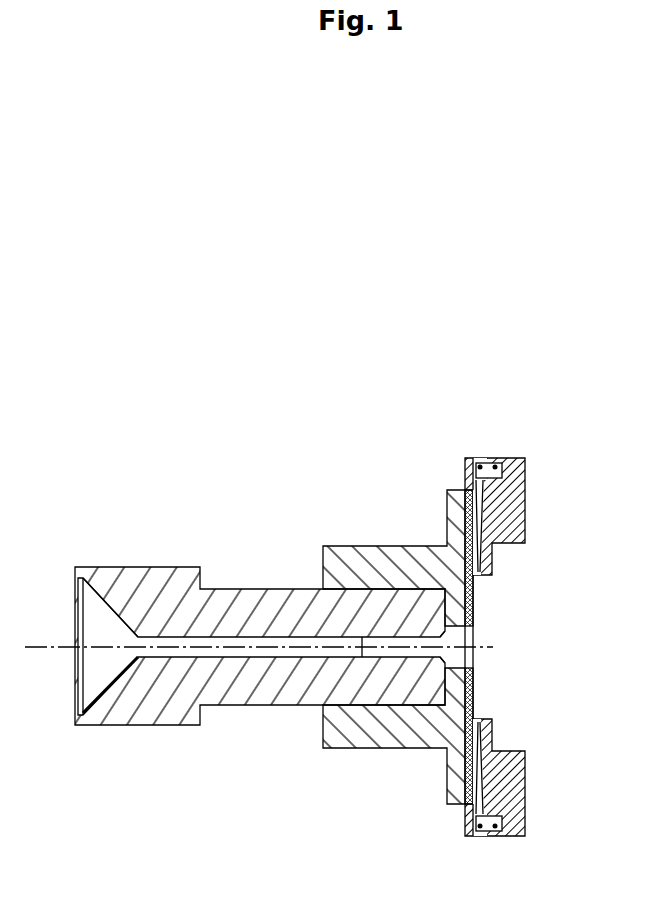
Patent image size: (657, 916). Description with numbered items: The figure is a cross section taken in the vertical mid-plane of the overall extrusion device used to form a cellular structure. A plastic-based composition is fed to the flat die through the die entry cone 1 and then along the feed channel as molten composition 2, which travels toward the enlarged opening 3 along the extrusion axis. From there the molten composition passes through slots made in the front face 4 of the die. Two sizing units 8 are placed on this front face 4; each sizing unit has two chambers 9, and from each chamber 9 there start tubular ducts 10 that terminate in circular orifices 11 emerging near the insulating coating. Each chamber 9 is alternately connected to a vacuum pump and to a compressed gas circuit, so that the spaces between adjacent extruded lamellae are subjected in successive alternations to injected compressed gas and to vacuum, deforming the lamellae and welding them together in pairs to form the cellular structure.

The die entry cone 1 is at (88, 626).
The molten composition 2 is at (386, 640).
The enlarged opening 3 is at (453, 637).
The front face 4 is at (473, 639).
The sizing units 8 is at (518, 530).
The chambers 9 is at (495, 467).
The tubular ducts 10 is at (482, 500).
The circular orifices 11 is at (474, 586).